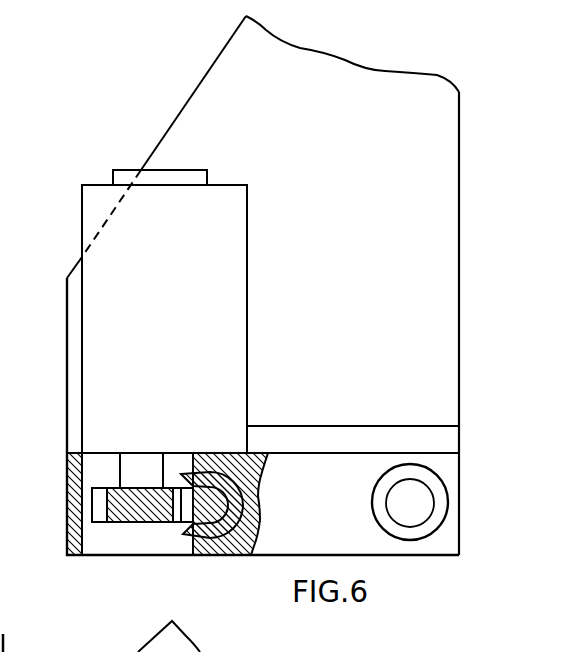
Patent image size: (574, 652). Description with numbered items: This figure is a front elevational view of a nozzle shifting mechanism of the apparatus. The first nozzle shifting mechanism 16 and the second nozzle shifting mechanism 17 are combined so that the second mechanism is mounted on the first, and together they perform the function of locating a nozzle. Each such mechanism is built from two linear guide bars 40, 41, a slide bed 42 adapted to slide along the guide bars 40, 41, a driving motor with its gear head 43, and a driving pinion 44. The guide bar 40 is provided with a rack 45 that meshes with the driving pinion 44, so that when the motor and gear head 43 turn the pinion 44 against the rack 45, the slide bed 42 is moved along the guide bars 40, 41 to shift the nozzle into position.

The first nozzle shifting mechanism 16 is at (413, 559).
The second nozzle shifting mechanism 17 is at (347, 288).
The linear guide bar 40 is at (218, 512).
The linear guide bar 41 is at (393, 500).
The slide bed 42 is at (443, 471).
The driving motor and gear head 43 is at (170, 337).
The driving pinion 44 is at (121, 520).
The rack 45 is at (190, 531).